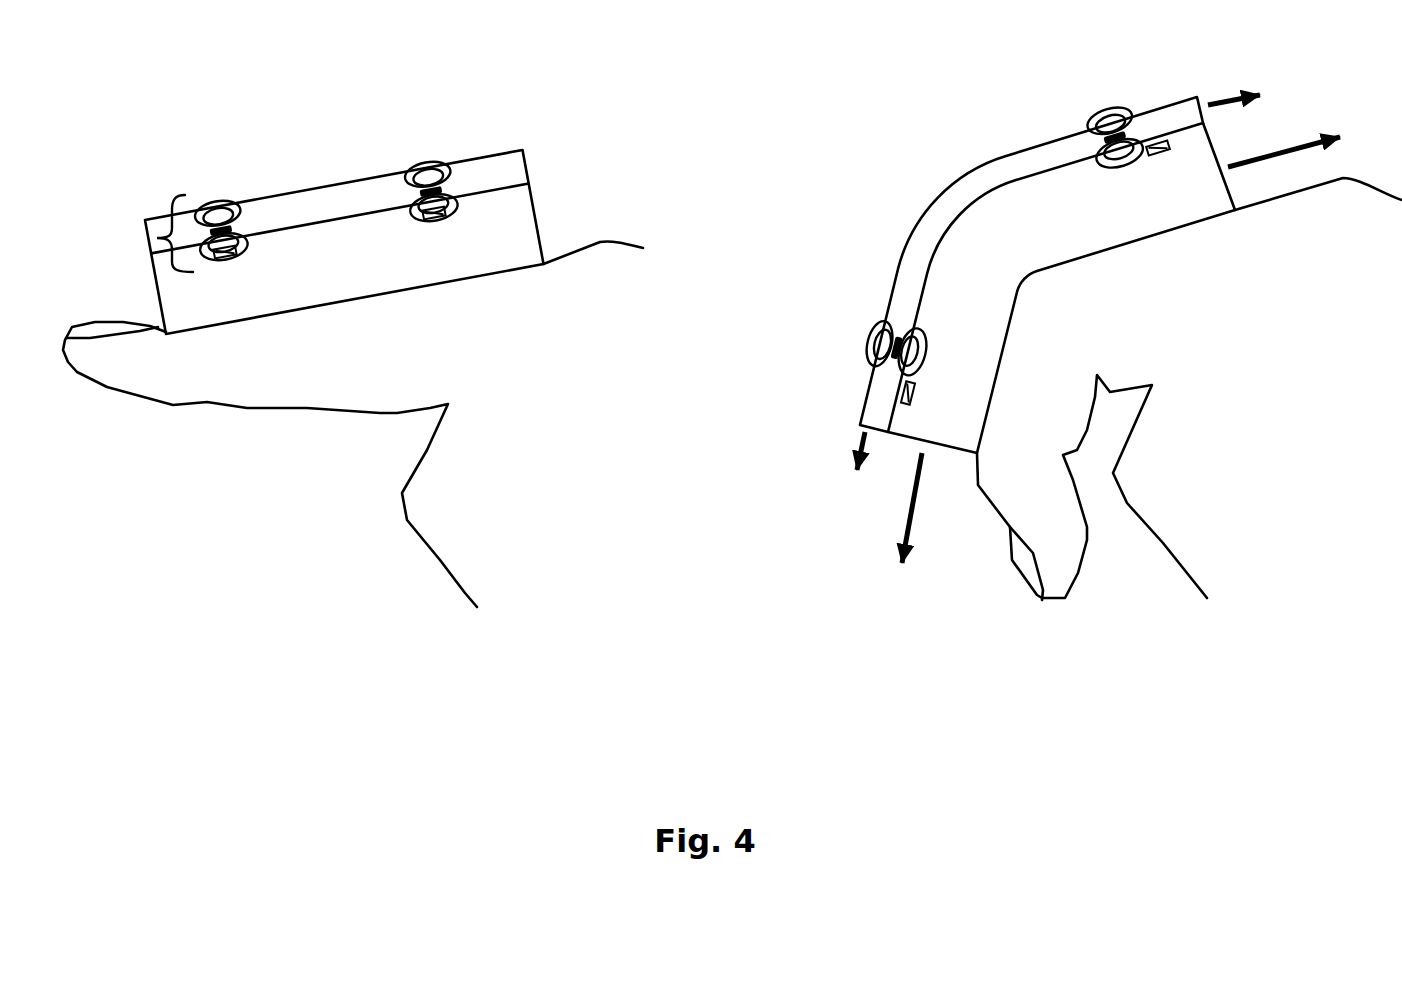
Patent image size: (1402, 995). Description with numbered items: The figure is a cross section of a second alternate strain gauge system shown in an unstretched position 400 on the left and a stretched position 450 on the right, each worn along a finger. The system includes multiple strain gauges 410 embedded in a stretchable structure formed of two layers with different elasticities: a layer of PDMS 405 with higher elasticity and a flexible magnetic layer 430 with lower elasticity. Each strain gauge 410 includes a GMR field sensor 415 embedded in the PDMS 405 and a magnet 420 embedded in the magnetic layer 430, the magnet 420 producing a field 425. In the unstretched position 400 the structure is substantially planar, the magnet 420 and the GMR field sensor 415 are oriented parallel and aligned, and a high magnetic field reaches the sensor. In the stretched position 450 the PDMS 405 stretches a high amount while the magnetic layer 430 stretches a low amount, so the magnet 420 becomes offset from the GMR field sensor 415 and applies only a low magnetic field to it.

The unstretched position 400 is at (298, 693).
The PDMS 405 is at (1058, 247).
The strain gauge 410 is at (127, 241).
The GMR field sensor 415 is at (243, 254).
The magnet 420 is at (882, 347).
The electric field 425 is at (226, 200).
The magnetic layer 430 is at (487, 177).
The stretched position 450 is at (1055, 693).